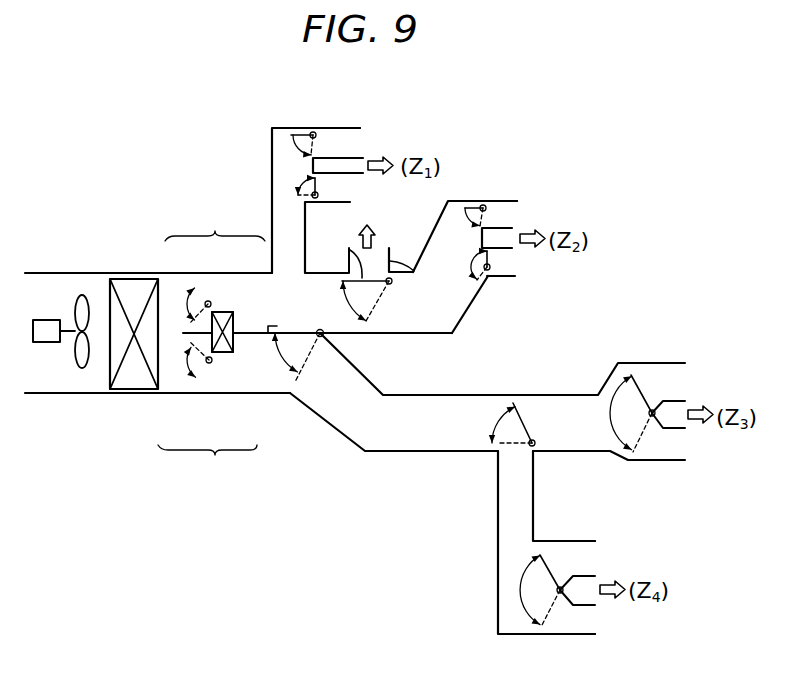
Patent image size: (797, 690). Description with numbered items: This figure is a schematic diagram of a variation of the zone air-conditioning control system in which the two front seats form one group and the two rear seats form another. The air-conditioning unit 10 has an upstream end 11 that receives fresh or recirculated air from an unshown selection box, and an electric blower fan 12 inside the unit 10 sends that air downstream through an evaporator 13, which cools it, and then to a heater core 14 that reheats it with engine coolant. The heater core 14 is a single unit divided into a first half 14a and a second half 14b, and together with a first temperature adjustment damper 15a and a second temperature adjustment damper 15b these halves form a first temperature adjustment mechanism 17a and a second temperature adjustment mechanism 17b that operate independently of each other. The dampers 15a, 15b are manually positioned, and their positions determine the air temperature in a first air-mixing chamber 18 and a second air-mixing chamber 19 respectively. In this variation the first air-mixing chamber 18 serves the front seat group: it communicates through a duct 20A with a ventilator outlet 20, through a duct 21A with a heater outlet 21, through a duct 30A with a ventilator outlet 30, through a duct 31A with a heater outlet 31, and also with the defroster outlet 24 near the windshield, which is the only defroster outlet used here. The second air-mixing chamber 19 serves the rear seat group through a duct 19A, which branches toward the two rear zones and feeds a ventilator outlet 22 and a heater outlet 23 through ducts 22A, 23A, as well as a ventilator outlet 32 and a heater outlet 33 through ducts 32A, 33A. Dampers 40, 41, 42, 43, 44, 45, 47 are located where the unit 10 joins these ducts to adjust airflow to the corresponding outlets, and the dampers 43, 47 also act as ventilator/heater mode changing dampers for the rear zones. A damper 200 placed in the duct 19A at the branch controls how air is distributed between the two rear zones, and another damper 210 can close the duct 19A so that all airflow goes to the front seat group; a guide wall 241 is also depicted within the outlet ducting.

The air-conditioning unit 10 is at (50, 273).
The upstream end 11 is at (42, 318).
The electric blower fan 12 is at (82, 295).
The evaporator 13 is at (132, 279).
The heater core 14 is at (242, 347).
The first half 14a is at (225, 312).
The second half 14b is at (222, 354).
The first temperature adjustment damper 15a is at (204, 300).
The second temperature adjustment damper 15b is at (207, 364).
The first temperature adjustment mechanism 17a is at (215, 223).
The second temperature adjustment mechanism 17b is at (207, 463).
The first air-mixing chamber 18 is at (275, 314).
The second air-mixing chamber 19 is at (272, 378).
The duct 19A is at (423, 452).
The ventilator outlet 20 is at (350, 147).
The duct 20A is at (334, 128).
The heater outlet 21 is at (355, 187).
The duct 21A is at (350, 203).
The ventilator outlet 22 is at (676, 382).
The duct 22A is at (663, 362).
The heater outlet 23 is at (680, 447).
The duct 23A is at (658, 462).
The defroster outlet 24 is at (380, 254).
The ventilator outlet 30 is at (507, 214).
The duct 30A is at (498, 193).
The heater outlet 31 is at (508, 257).
The duct 31A is at (503, 277).
The ventilator outlet 32 is at (592, 555).
The duct 32A is at (568, 541).
The heater outlet 33 is at (587, 618).
The duct 33A is at (568, 634).
The damper 40 is at (300, 128).
The damper 41 is at (318, 196).
The damper 42 is at (349, 255).
The damper 43 is at (641, 368).
The damper 44 is at (481, 204).
The damper 45 is at (489, 265).
The damper 47 is at (549, 567).
The damper 200 is at (520, 407).
The damper 210 is at (292, 332).
The guide wall 241 is at (416, 270).